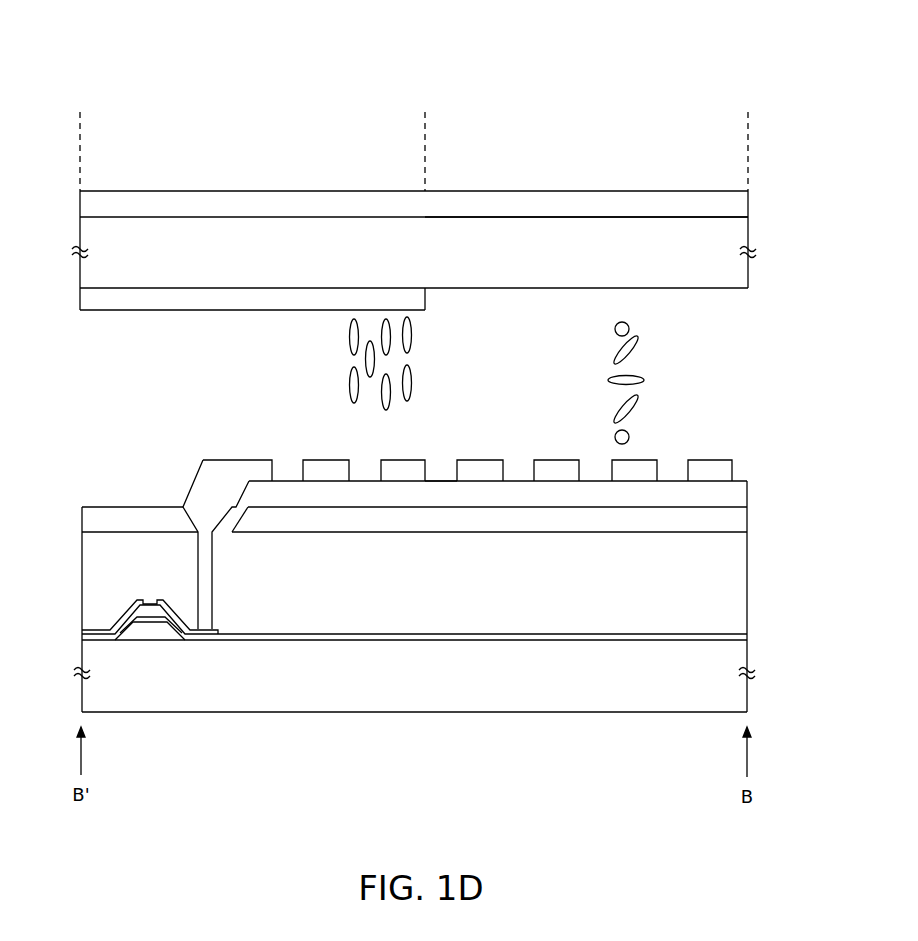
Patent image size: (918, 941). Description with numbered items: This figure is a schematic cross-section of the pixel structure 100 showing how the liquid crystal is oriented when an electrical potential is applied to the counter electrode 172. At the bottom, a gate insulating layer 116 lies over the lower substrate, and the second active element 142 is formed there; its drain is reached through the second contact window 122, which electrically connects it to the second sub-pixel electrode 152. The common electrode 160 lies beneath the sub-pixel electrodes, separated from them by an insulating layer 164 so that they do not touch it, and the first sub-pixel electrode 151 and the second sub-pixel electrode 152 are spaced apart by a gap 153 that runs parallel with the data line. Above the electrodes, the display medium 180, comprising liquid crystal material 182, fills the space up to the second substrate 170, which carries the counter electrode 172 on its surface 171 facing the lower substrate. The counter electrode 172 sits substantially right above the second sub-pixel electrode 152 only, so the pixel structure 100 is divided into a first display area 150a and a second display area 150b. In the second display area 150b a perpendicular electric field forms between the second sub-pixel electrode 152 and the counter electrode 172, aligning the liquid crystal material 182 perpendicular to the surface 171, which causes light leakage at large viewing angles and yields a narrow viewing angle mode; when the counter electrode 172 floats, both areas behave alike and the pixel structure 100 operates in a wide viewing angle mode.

The pixel structure 100 is at (62, 35).
The first display area 150a is at (425, 122).
The second display area 150b is at (80, 122).
The second substrate 170 is at (66, 192).
The surface 171 is at (687, 290).
The counter electrode 172 is at (108, 302).
The liquid crystal material 182 is at (409, 339).
The display medium 180 is at (638, 367).
The second sub-pixel electrode 152 is at (320, 466).
The gap 153 is at (438, 467).
The first sub-pixel electrode 151 is at (482, 466).
The insulating layer 164 is at (93, 515).
The common electrode 160 is at (740, 524).
The second active element 142 is at (153, 653).
The second contact window 122 is at (203, 620).
The gate insulating layer 116 is at (268, 638).